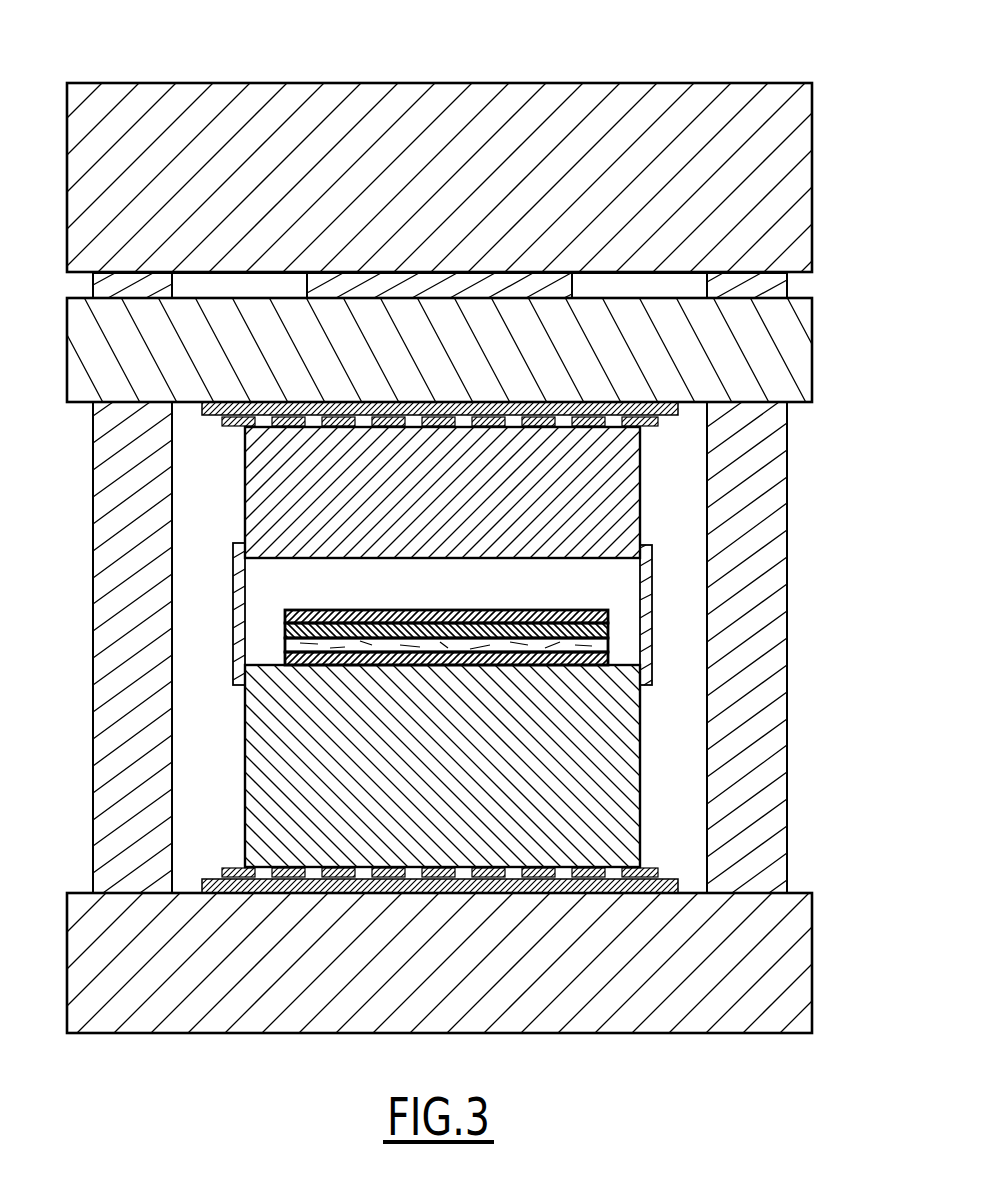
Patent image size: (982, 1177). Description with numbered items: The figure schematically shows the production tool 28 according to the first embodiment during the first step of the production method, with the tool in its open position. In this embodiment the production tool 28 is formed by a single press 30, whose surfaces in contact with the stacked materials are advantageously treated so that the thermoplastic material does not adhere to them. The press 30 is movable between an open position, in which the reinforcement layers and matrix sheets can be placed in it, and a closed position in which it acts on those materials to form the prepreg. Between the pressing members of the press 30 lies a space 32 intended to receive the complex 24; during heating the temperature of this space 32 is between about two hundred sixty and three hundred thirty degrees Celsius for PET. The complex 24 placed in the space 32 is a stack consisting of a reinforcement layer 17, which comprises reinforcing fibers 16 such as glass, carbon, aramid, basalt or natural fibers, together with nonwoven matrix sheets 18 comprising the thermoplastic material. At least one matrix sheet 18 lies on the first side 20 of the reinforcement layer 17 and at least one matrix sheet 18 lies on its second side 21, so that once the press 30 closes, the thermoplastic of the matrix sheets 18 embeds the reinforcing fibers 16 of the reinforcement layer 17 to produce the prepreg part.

The production tool 28 is at (830, 117).
The press 30 is at (690, 545).
The space 32 is at (275, 581).
The first side 20 is at (449, 660).
The reinforcing fibers 16 is at (287, 646).
The second side 21 is at (300, 668).
The complex 24 is at (613, 609).
The nonwoven matrix sheet 18 is at (610, 630).
The reinforcement layer 17 is at (610, 647).